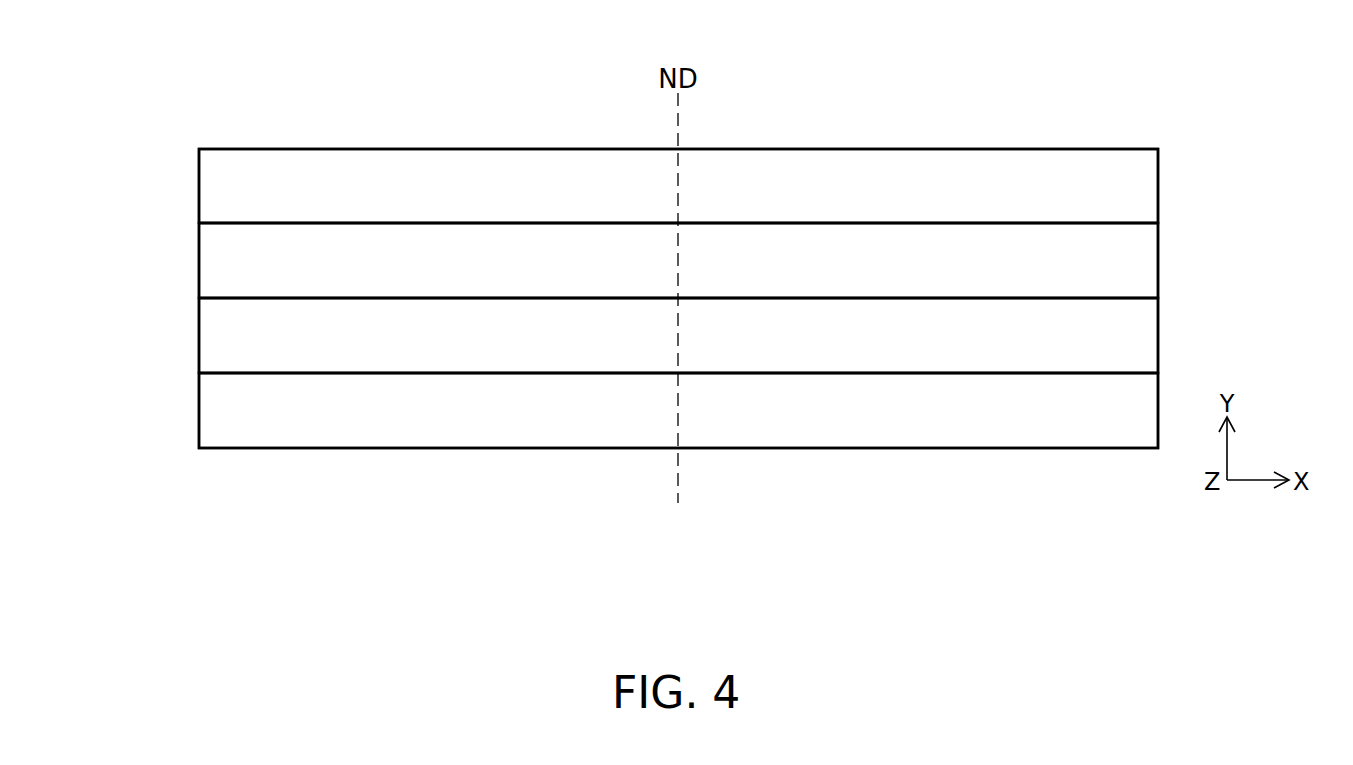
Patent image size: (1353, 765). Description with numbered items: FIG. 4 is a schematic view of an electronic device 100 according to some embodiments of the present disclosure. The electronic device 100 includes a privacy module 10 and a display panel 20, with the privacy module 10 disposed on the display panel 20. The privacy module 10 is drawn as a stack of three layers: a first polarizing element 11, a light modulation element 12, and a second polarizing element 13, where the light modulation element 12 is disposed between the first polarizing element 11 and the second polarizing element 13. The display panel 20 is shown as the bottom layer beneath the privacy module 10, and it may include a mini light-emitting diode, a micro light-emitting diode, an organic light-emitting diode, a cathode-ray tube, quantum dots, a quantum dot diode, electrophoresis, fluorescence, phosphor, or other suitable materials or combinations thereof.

The electronic device 100 is at (198, 60).
The privacy module 10 is at (142, 175).
The first polarizing element 11 is at (221, 184).
The light modulation element 12 is at (221, 259).
The second polarizing element 13 is at (221, 334).
The display panel 20 is at (221, 409).